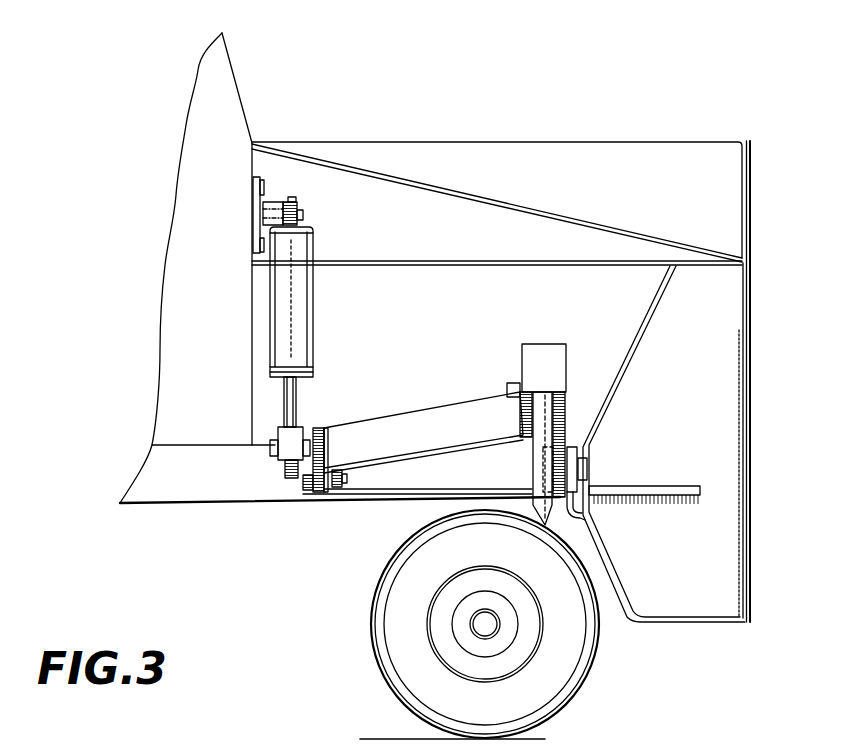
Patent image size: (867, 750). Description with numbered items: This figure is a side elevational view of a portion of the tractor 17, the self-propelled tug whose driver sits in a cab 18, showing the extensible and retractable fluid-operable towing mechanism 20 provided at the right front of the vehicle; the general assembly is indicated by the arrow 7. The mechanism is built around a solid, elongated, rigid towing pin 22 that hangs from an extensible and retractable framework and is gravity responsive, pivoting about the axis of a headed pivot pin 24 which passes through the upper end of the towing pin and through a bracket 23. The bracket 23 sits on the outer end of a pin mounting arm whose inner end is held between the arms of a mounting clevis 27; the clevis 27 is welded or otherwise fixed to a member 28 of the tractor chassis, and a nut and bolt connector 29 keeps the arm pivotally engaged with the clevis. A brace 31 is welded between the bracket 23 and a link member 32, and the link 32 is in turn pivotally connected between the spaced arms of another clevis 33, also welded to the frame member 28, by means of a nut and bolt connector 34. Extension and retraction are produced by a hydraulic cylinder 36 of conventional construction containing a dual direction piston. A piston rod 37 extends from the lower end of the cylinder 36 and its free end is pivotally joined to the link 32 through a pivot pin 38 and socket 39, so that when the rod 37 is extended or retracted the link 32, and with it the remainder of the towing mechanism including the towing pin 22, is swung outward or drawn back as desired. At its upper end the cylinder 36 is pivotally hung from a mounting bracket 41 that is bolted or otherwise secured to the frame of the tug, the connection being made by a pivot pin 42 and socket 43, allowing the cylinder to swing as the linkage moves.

The mounting assembly 7 is at (437, 388).
The tractor 17 is at (510, 136).
The cab 18 is at (233, 104).
The towing mechanism 20 is at (273, 507).
The towing pin 22 is at (532, 458).
The bracket 23 is at (545, 352).
The headed pivot pin 24 is at (506, 382).
The mounting clevis 27 is at (573, 512).
The frame member 28 is at (405, 491).
The nut and bolt connector 29 is at (588, 478).
The brace 31 is at (382, 418).
The link member 32 is at (319, 430).
The clevis 33 is at (312, 497).
The nut and bolt connector 34 is at (338, 498).
The hydraulic cylinder 36 is at (310, 333).
The piston rod 37 is at (291, 411).
The pivot pin 38 is at (268, 450).
The socket 39 is at (282, 466).
The mounting bracket 41 is at (250, 203).
The pivot pin 42 is at (304, 214).
The socket 43 is at (292, 199).